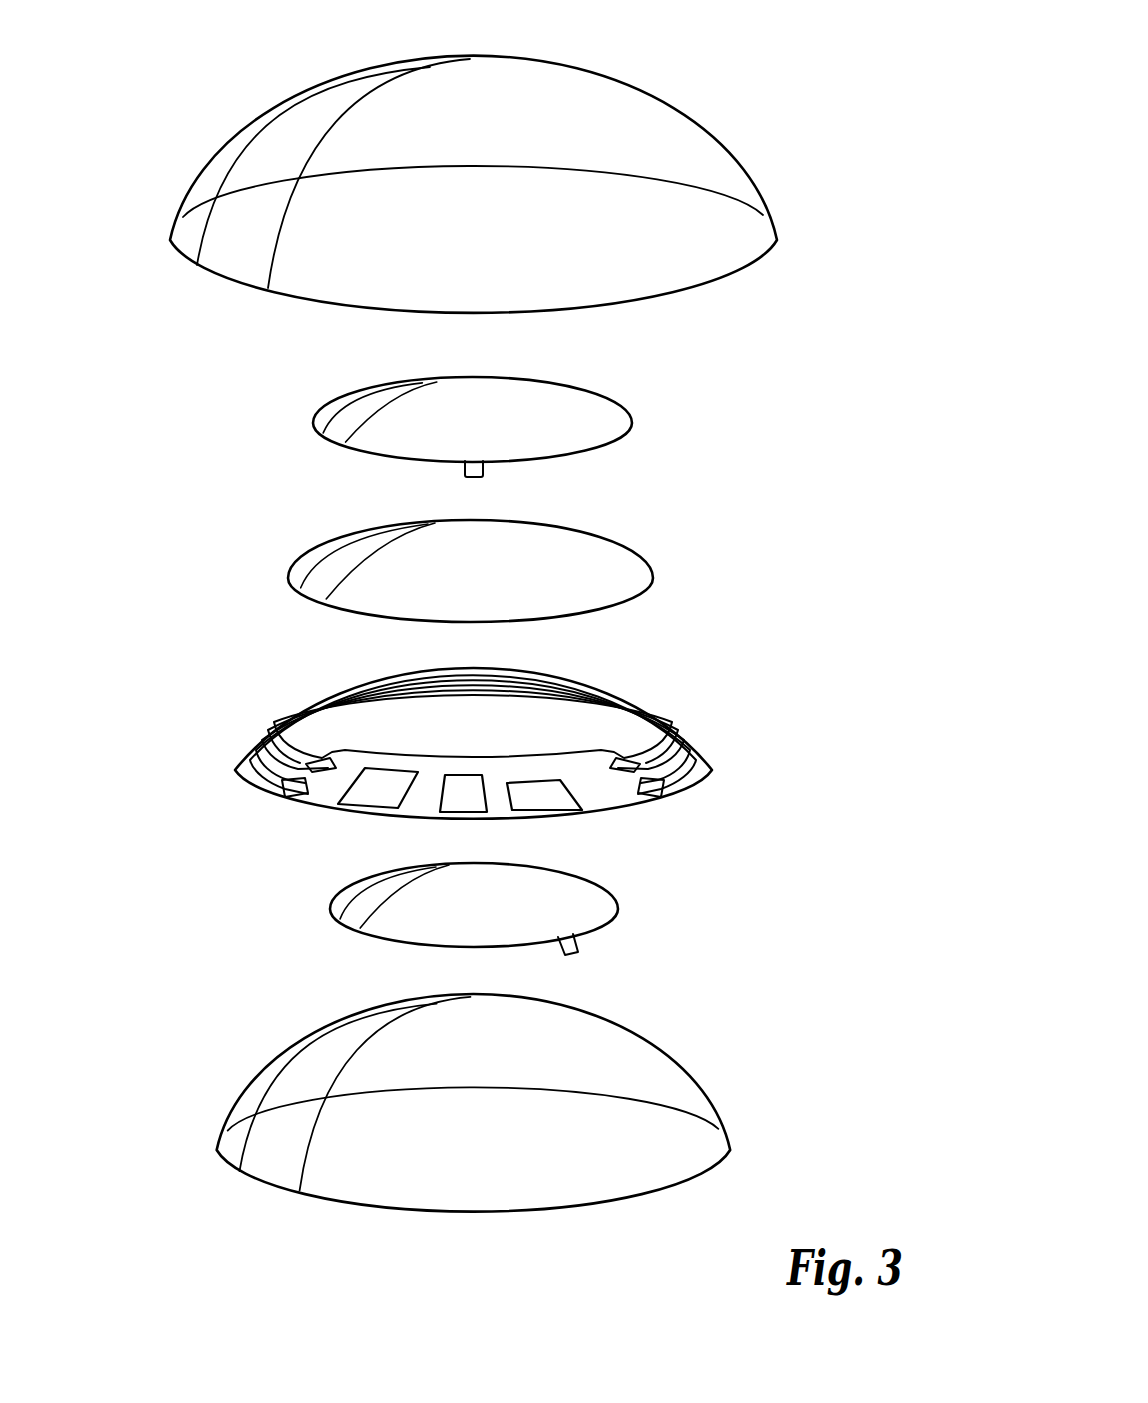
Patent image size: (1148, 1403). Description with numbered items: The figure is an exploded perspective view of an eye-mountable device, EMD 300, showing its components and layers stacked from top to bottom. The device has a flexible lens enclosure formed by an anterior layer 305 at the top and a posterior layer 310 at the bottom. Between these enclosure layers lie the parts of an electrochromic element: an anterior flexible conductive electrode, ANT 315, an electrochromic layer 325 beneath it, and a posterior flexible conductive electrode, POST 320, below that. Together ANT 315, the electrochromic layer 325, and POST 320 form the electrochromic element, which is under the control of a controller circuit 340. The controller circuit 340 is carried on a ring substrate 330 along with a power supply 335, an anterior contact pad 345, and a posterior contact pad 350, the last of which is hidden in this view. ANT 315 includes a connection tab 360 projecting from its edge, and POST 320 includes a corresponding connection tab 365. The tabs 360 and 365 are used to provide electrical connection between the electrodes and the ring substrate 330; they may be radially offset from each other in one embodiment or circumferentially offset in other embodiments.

The eye-mountable device (EMD) 300 is at (130, 75).
The anterior layer 305 is at (648, 94).
The posterior layer 310 is at (677, 1061).
The anterior flexible conductive electrode (ANT) 315 is at (622, 406).
The posterior flexible conductive electrode (POST) 320 is at (346, 929).
The electrochromic layer 325 is at (631, 539).
The ring substrate 330 is at (689, 705).
The power supply 335 is at (368, 793).
The controller circuit 340 is at (462, 783).
The anterior contact pad 345 is at (522, 790).
The posterior contact pad 350 is at (514, 828).
The connection tab 360 is at (482, 469).
The connection tab 365 is at (578, 947).